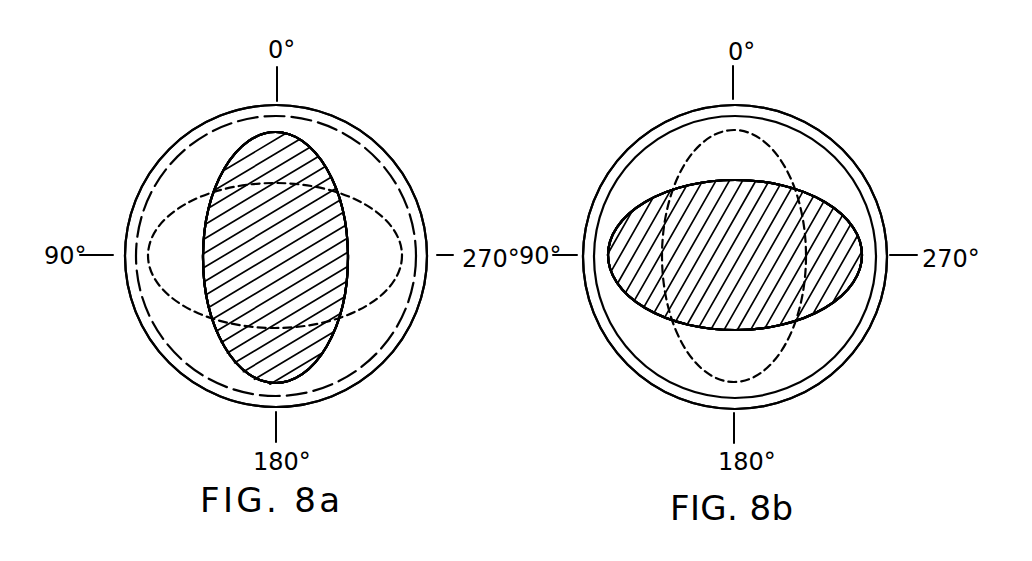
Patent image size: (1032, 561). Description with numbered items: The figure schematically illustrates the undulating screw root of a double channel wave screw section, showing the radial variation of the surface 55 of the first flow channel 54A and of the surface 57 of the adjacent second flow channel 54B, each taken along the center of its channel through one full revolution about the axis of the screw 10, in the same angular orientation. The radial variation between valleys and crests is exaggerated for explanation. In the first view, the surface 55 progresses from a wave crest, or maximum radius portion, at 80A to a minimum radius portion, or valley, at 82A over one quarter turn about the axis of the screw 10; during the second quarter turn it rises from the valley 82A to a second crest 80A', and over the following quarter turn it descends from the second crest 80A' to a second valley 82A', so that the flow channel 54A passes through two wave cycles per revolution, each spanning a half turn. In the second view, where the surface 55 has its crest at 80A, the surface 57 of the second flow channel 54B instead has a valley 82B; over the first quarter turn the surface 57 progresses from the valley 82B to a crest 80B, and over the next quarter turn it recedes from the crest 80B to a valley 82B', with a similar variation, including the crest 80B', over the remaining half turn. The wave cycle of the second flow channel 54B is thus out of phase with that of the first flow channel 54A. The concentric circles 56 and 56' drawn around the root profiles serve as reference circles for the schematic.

In FIG. 8A, the screw 10 is at (453, 210).
In FIG. 8B, the screw 10 is at (593, 365).
In FIG. 8A, the first flow channel 54A is at (370, 340).
In FIG. 8B, the second flow channel 54B is at (817, 350).
In FIG. 8A, the surface portion of flow channel 54A 55 is at (315, 150).
In FIG. 8B, the surface portion of flow channel 54A 55 is at (682, 168).
In FIG. 8A, the inner circle 56 is at (252, 265).
In FIG. 8B, the inner circle 56 is at (742, 236).
In FIG. 8A, the outer circle 56' is at (272, 233).
In FIG. 8B, the outer circle 56' is at (735, 223).
In FIG. 8A, the surface of the second flow channel 57 is at (372, 205).
In FIG. 8B, the surface of the second flow channel 57 is at (828, 204).
In FIG. 8A, the wave crest 80A is at (273, 199).
In FIG. 8A, the second crest 80A' is at (257, 298).
In FIG. 8A, the valley 82A is at (210, 257).
In FIG. 8A, the second valley 82A' is at (349, 257).
In FIG. 8B, the crest 80B is at (697, 255).
In FIG. 8B, the right end point of ellipse 57 80B' is at (783, 265).
In FIG. 8B, the valley 82B is at (735, 193).
In FIG. 8B, the valley 82B' is at (735, 313).